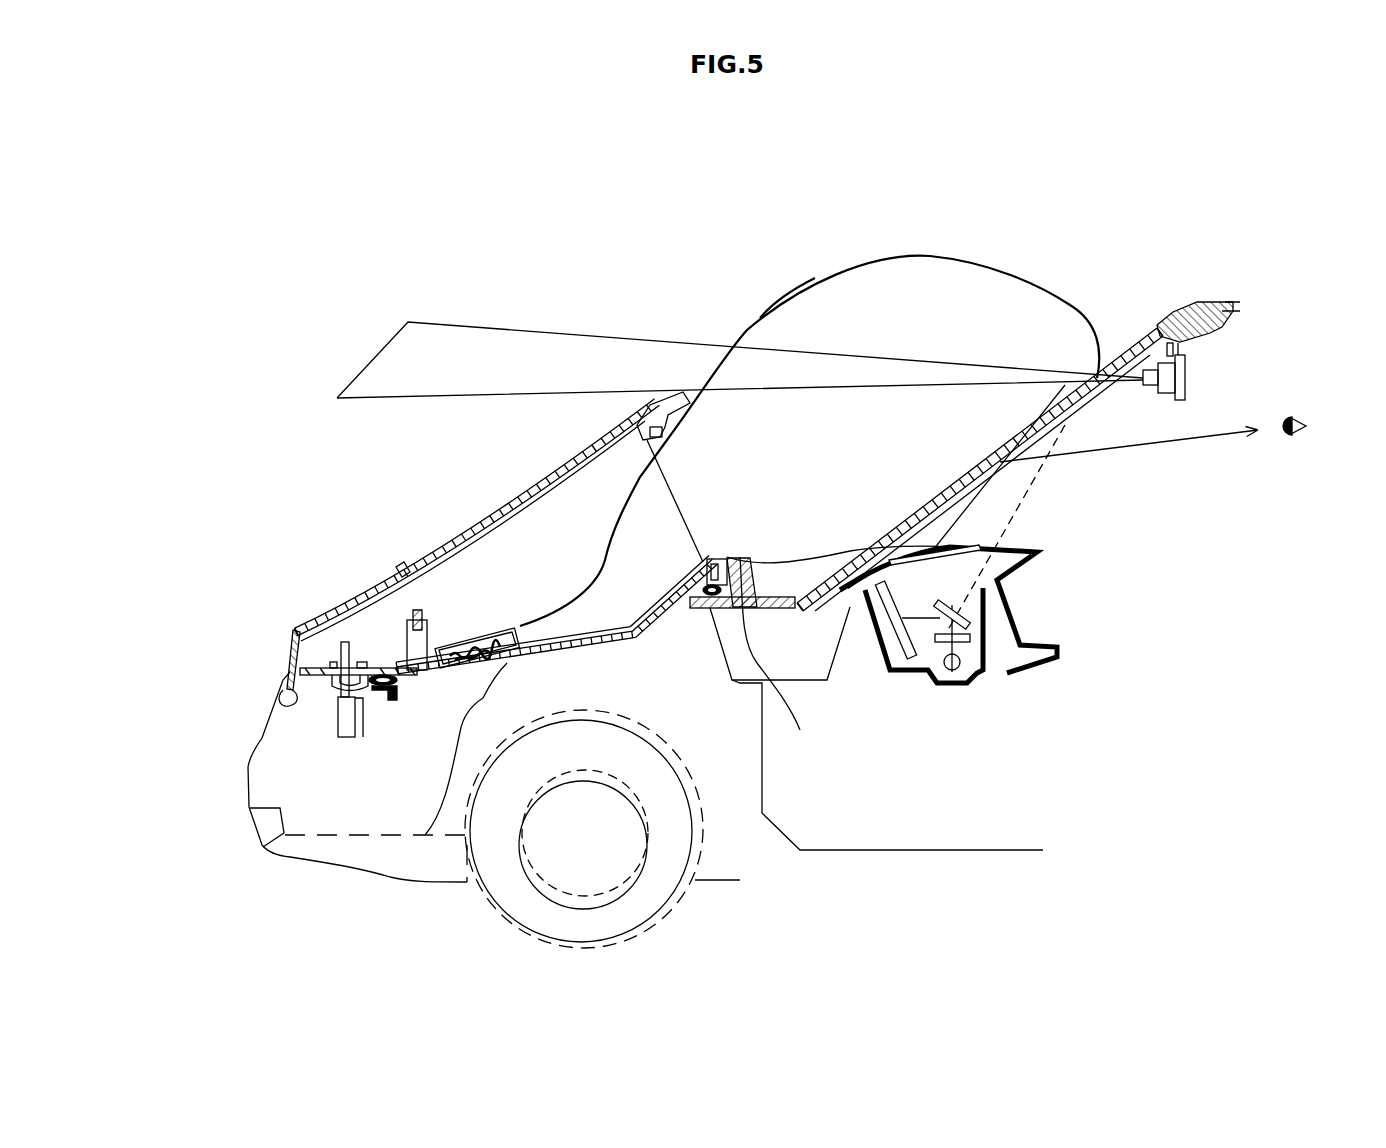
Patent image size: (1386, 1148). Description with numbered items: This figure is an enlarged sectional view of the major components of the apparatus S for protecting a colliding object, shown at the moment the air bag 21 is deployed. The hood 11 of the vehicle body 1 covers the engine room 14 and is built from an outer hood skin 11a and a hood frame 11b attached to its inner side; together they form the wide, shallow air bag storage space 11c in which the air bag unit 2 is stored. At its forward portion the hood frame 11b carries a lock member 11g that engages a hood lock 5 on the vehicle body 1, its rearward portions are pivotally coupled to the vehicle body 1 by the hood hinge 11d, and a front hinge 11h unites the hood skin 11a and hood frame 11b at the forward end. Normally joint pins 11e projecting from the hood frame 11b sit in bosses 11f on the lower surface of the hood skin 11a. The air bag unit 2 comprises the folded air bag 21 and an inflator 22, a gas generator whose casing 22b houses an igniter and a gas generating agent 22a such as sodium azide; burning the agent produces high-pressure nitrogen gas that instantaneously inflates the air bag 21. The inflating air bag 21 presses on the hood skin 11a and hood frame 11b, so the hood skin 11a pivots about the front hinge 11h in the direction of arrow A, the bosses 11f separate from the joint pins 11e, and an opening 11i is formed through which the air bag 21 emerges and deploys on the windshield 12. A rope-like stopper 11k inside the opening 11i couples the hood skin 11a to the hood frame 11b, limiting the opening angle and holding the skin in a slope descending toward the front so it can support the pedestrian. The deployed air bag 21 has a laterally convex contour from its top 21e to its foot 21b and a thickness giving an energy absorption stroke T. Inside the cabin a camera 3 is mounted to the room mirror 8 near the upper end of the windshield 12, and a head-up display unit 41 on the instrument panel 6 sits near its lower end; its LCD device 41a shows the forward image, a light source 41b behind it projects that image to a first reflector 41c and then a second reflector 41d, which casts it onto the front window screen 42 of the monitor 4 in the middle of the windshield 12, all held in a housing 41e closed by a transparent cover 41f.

The vehicle body 1 is at (1192, 299).
The air bag unit 2 is at (696, 434).
The camera 3 is at (1153, 325).
The monitor 4 is at (1100, 457).
The hood lock 5 is at (347, 728).
The instrument panel 6 is at (1030, 553).
The room mirror 8 is at (1186, 372).
The hood 11 is at (370, 574).
The hood skin 11a is at (310, 665).
The hood frame 11b is at (300, 657).
The air bag storage space 11c is at (478, 600).
The hood hinge 11d is at (778, 750).
The joint pins 11e is at (420, 610).
The bosses 11f is at (400, 568).
The lock member 11g is at (290, 630).
The front hinge 11h is at (290, 703).
The opening 11i is at (720, 448).
The stopper 11k is at (670, 438).
The windshield 12 is at (1092, 338).
The engine room 14 is at (425, 835).
The air bag 21 is at (557, 612).
The foot 21b is at (623, 498).
The top 21e is at (787, 300).
The inflator 22 is at (495, 605).
The gas generating agent 22a is at (507, 660).
The casing 22b is at (490, 672).
The head-up display unit 41 is at (990, 548).
The liquid crystal display device 41a is at (977, 673).
The light source 41b is at (953, 685).
The first reflector 41c is at (993, 617).
The second reflector 41d is at (905, 660).
The housing 41e is at (875, 642).
The transparent cover 41f is at (1018, 575).
The front window screen 42 is at (1035, 415).
The arrow A is at (615, 578).
The apparatus for a vehicle for protection of a colliding object S is at (878, 258).
The energy absorption stroke T is at (962, 463).